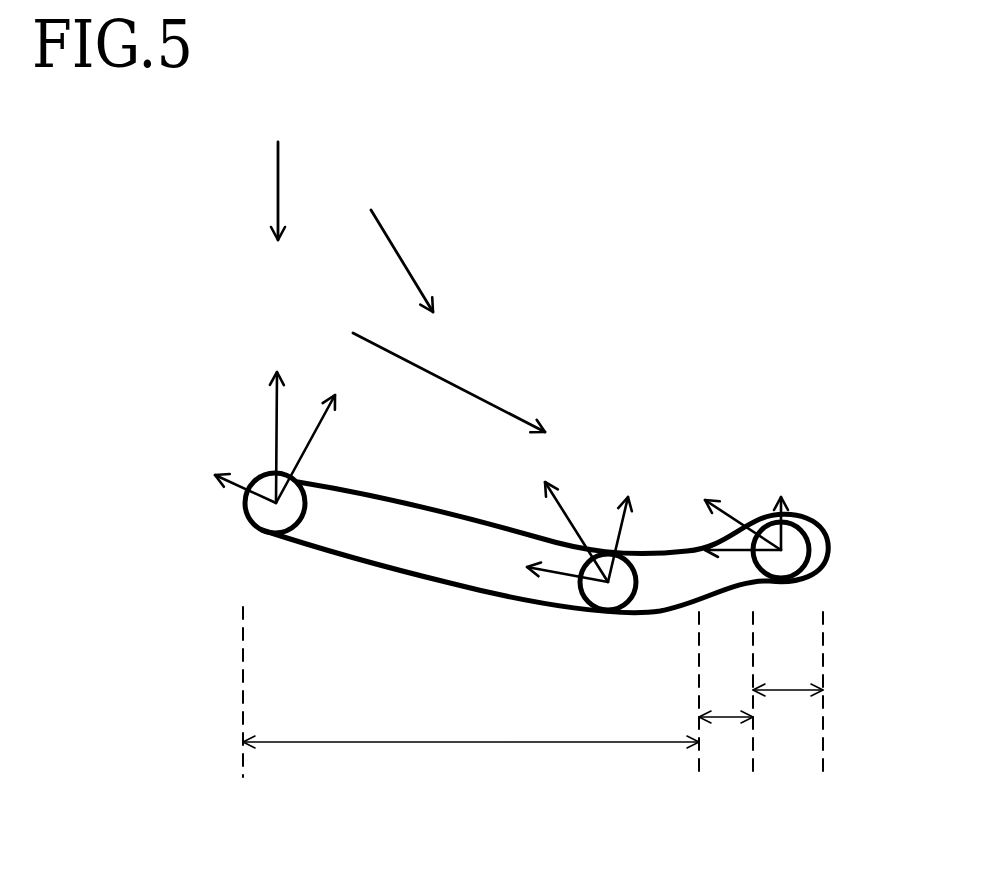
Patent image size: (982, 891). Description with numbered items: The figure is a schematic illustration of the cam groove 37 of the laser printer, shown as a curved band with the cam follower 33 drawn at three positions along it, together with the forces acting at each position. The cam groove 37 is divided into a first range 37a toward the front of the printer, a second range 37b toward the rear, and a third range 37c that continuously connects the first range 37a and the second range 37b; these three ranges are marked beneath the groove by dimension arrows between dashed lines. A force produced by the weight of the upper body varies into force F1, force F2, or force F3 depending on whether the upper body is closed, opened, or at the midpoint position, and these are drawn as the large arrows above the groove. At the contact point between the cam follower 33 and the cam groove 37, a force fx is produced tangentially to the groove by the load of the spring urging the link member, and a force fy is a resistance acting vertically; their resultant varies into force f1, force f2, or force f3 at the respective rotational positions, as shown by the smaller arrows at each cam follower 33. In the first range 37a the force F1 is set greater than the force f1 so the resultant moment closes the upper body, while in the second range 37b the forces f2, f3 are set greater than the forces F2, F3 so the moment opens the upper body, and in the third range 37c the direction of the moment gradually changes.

The cam groove 37 is at (663, 548).
The cam follower 33 is at (263, 513).
The first range 37a is at (785, 692).
The second range 37b is at (460, 742).
The third range 37c is at (727, 720).
The force F1 is at (456, 382).
The force F2 is at (255, 215).
The force F3 is at (423, 261).
The force f1 is at (739, 504).
The force f2 is at (275, 430).
The force f3 is at (565, 523).
The force fx is at (735, 572).
The force fy is at (797, 504).